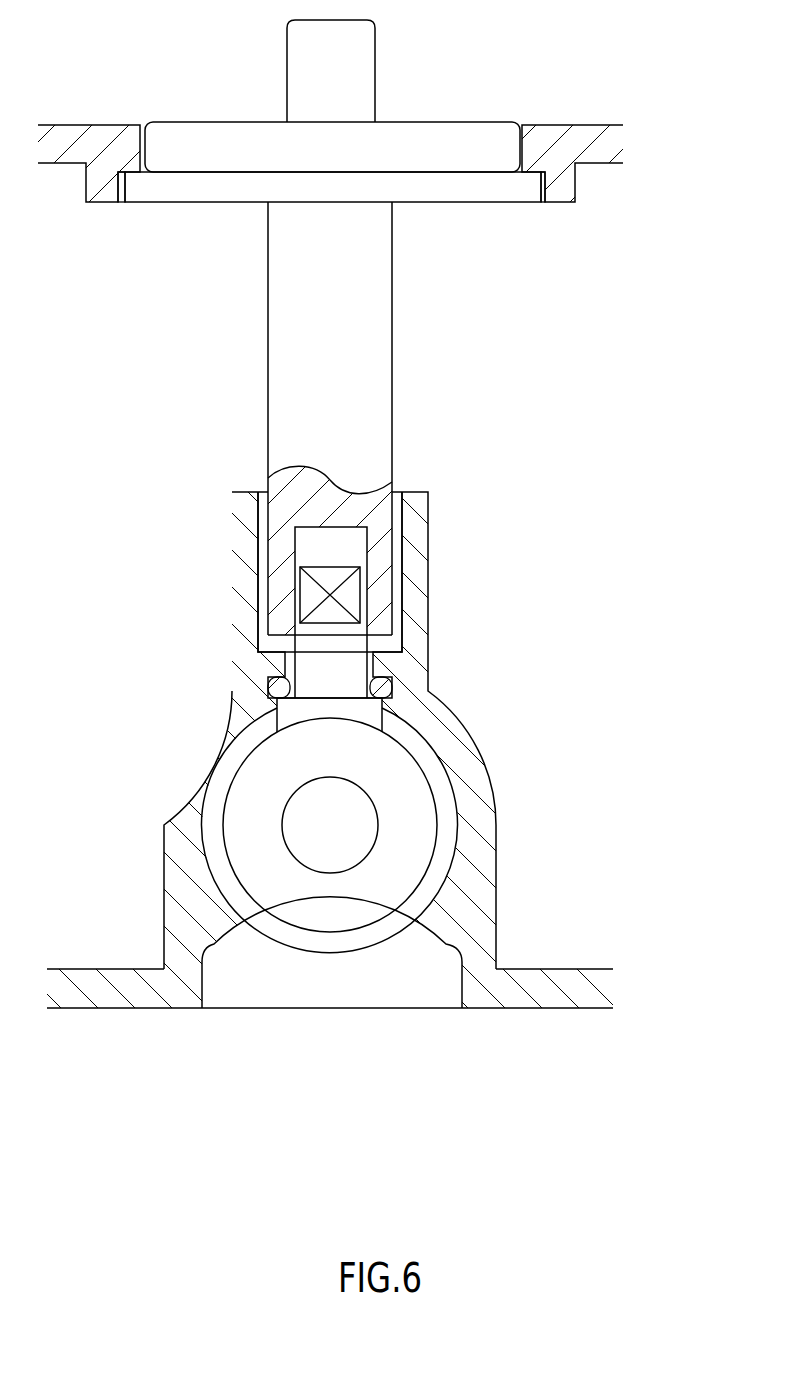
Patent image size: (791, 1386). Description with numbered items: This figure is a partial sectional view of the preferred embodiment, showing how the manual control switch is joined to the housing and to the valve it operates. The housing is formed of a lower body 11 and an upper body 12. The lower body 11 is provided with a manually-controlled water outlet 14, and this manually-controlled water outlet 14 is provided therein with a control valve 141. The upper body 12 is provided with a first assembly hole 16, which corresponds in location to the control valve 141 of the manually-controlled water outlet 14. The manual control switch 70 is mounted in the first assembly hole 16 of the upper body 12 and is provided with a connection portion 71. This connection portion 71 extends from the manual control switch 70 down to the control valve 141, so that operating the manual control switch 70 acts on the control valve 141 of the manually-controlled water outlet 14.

The lower body 11 is at (558, 1010).
The upper body 12 is at (565, 123).
The manually-controlled water outlet 14 is at (458, 795).
The control valve 141 is at (435, 854).
The first assembly hole 16 is at (121, 185).
The manual control switch 70 is at (363, 70).
The connection portion 71 is at (372, 344).